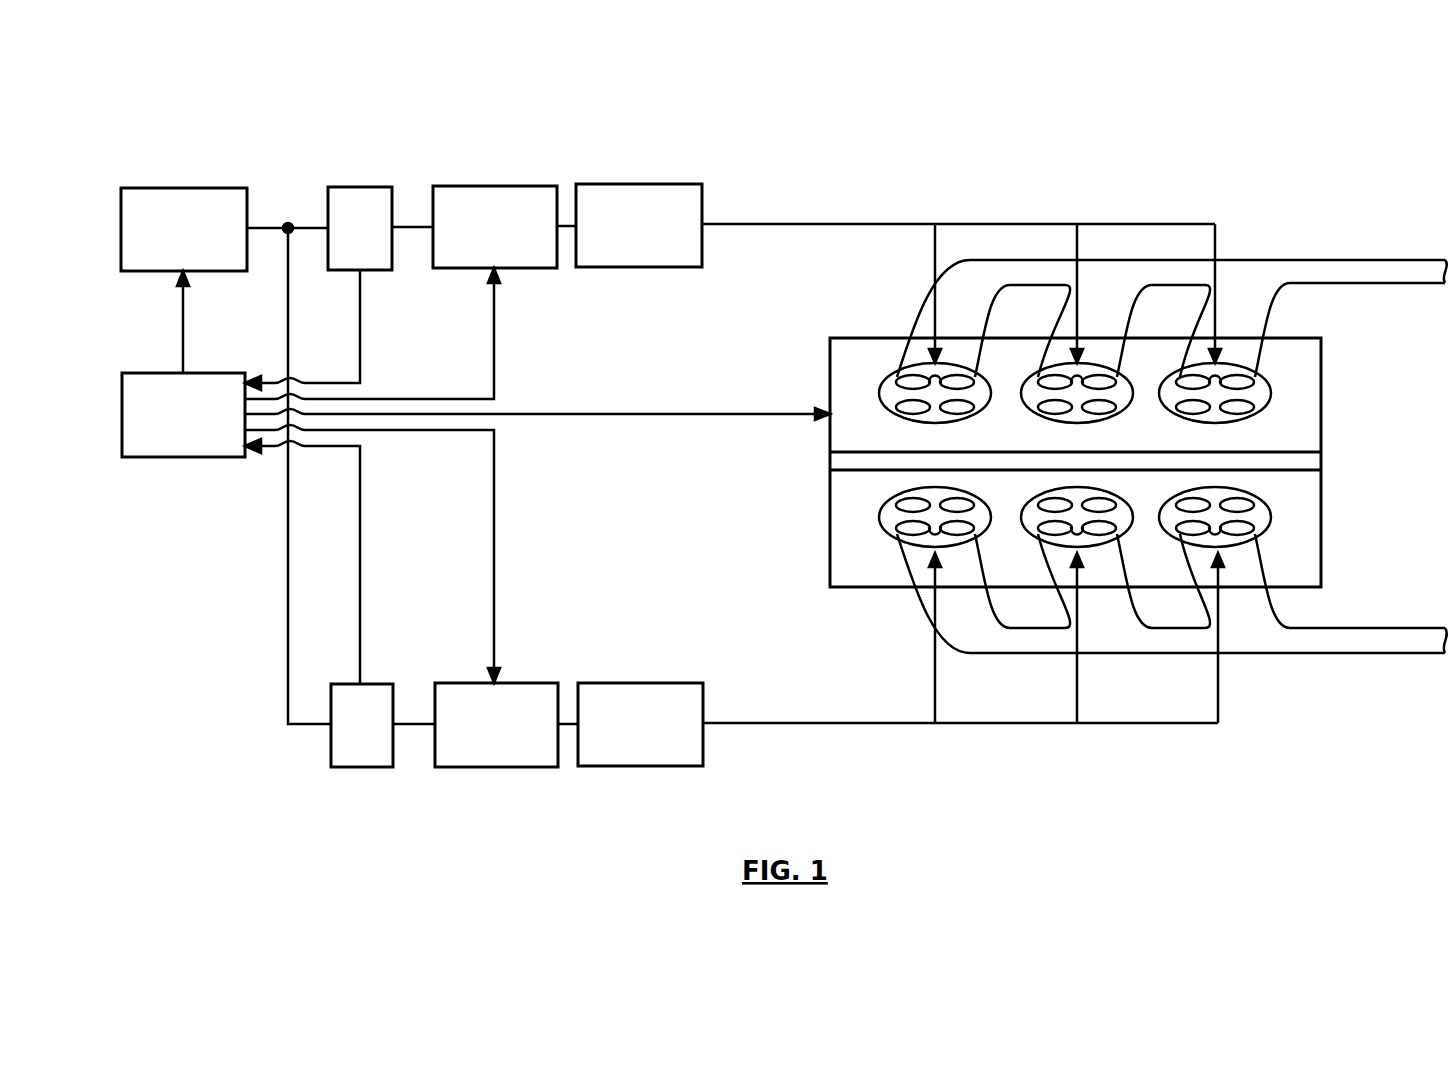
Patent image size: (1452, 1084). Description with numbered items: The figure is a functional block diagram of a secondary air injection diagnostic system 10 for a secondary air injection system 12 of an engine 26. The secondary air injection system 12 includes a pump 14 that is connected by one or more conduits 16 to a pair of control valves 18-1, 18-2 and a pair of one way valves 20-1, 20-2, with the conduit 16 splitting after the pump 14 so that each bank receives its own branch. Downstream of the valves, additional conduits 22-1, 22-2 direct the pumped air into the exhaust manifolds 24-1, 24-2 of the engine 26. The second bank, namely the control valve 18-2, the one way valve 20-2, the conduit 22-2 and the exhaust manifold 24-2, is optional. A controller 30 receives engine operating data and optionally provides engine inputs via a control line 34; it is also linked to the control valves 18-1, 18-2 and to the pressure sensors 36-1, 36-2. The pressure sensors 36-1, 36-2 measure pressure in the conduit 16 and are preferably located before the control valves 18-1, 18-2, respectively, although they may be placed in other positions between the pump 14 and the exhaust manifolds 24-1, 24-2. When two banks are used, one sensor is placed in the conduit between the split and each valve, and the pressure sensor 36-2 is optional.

The secondary air injection diagnostic system 10 is at (216, 547).
The secondary air injection system 12 is at (708, 138).
The pump 14 is at (185, 188).
The conduit 16 is at (267, 222).
The control valve 18-1 is at (494, 186).
The control valve 18-2 is at (497, 767).
The one way valve 20-1 is at (700, 205).
The one way valve 20-2 is at (642, 767).
The conduit 22-1 is at (834, 224).
The conduit 22-2 is at (847, 723).
The exhaust manifold 24-1 is at (1302, 260).
The exhaust manifold 24-2 is at (1362, 653).
The engine 26 is at (1300, 365).
The controller 30 is at (183, 457).
The control line 34 is at (620, 413).
The pressure sensor 36-1 is at (358, 187).
The pressure sensor 36-2 is at (360, 767).